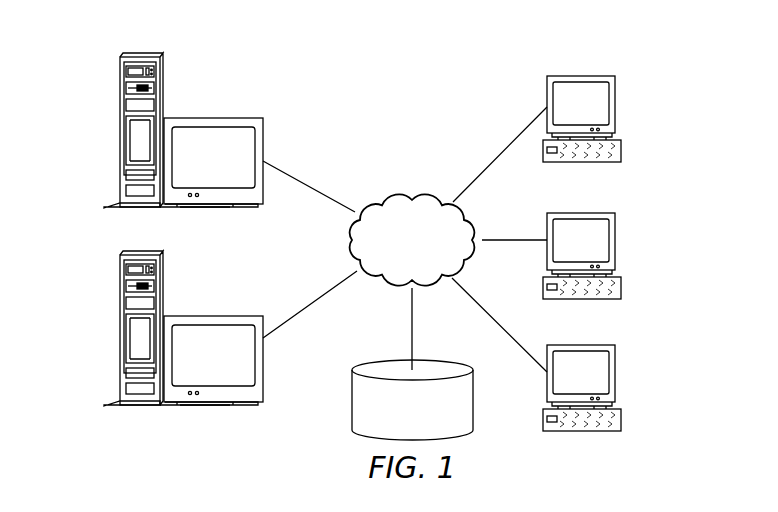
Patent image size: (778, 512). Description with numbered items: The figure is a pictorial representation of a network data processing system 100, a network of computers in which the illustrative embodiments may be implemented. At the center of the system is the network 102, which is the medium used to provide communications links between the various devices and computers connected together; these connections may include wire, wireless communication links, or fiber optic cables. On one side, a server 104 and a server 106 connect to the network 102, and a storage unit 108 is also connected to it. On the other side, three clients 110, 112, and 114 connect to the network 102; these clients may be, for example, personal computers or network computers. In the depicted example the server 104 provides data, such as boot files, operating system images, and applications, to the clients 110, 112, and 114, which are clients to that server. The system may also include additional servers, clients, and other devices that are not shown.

The network data processing system 100 is at (457, 98).
The network 102 is at (386, 193).
The server 104 is at (119, 133).
The server 106 is at (119, 333).
The storage unit 108 is at (351, 410).
The client 110 is at (616, 105).
The client 112 is at (616, 240).
The client 114 is at (616, 373).